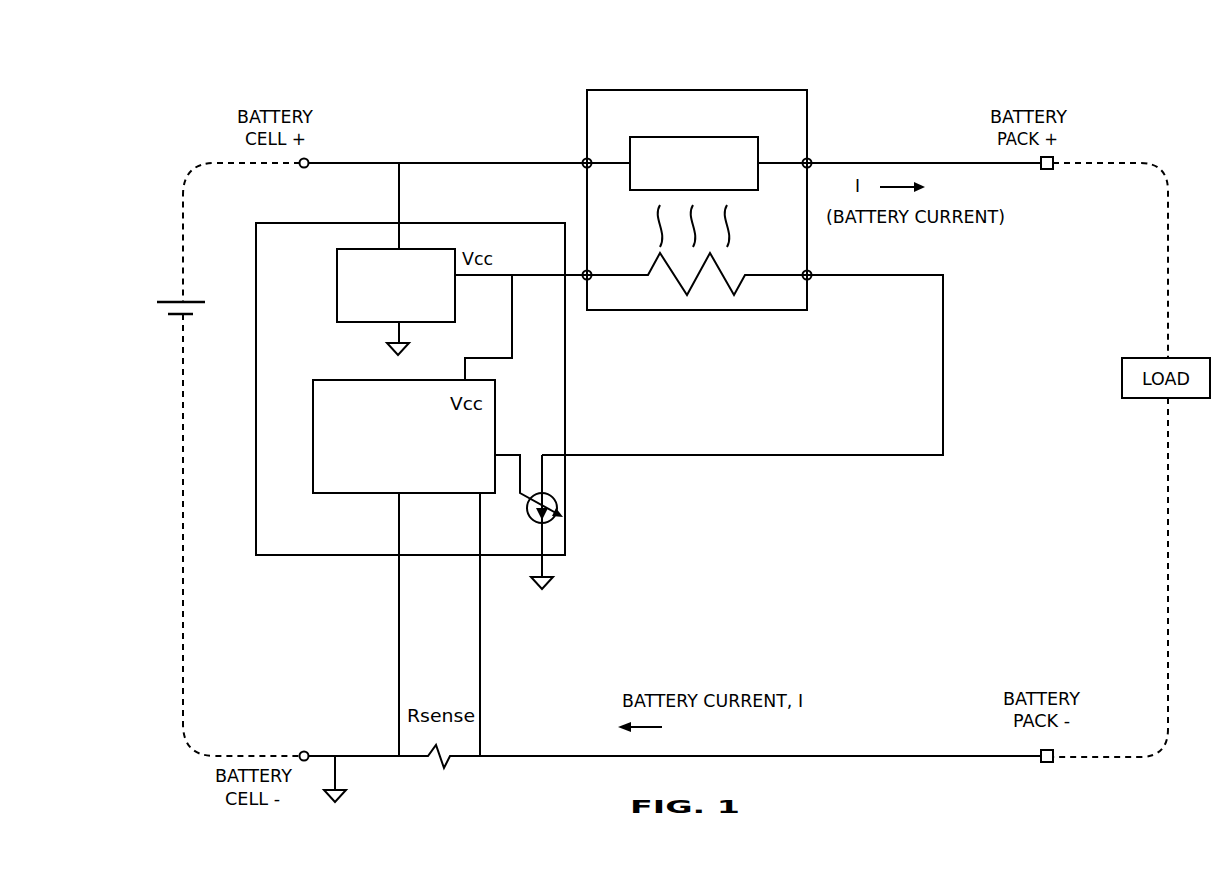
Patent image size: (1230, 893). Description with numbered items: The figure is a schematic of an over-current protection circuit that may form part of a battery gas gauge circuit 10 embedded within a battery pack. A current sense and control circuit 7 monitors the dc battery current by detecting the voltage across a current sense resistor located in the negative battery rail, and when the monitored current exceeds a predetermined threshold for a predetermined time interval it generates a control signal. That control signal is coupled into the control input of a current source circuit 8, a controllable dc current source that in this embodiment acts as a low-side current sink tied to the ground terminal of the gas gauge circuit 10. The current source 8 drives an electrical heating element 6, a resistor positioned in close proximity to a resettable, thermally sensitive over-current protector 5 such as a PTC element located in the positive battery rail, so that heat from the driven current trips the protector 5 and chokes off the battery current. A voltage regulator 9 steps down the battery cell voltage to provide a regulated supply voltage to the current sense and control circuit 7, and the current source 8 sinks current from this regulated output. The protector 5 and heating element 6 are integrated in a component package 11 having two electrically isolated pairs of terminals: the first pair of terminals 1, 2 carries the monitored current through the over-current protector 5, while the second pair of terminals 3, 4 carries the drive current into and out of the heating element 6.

The first package terminal 1 is at (580, 153).
The second package terminal 2 is at (814, 151).
The third package terminal 3 is at (579, 294).
The fourth package terminal 4 is at (814, 289).
The over-current protector 5 is at (643, 137).
The electrical heating element 6 is at (707, 295).
The current sense and control circuit 7 is at (343, 380).
The current source circuit 8 is at (558, 503).
The voltage regulator 9 is at (455, 310).
The battery gas gauge circuit 10 is at (293, 555).
The component package 11 is at (582, 85).